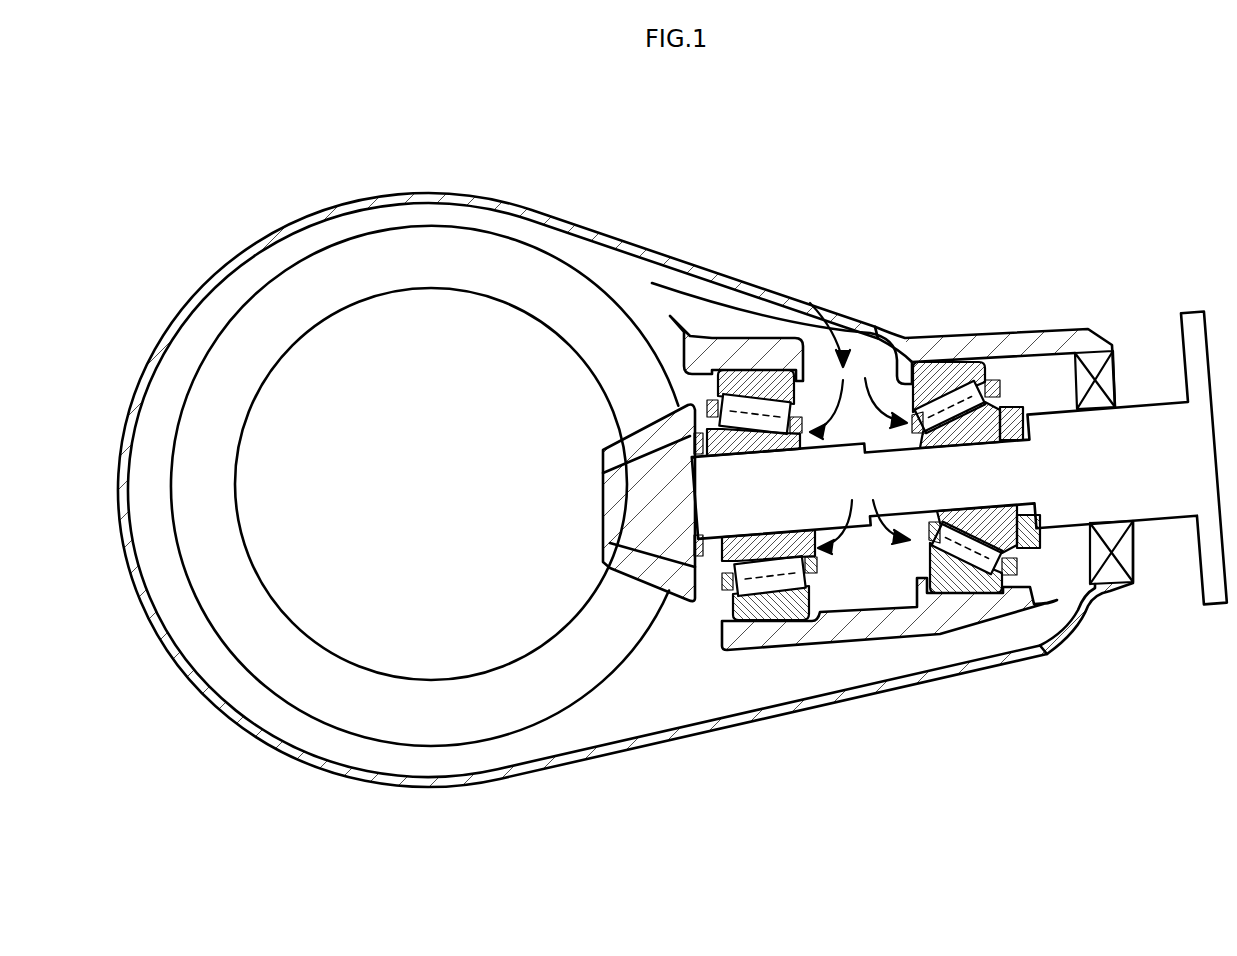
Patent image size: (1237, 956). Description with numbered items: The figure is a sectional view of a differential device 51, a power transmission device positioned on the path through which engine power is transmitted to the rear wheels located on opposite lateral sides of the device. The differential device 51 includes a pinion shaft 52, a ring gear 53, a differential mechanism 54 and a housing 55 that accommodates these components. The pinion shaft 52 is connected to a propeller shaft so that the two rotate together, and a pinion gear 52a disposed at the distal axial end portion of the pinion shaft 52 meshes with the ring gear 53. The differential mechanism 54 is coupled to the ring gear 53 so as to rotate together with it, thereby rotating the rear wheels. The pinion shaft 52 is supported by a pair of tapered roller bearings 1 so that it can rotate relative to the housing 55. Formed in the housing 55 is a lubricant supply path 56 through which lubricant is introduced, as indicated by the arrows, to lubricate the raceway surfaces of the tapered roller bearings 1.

The tapered roller bearing 1 is at (745, 367).
The differential device 51 is at (273, 162).
The pinion shaft 52 is at (1155, 400).
The pinion gear 52a is at (680, 585).
The ring gear 53 is at (528, 262).
The differential mechanism 54 is at (438, 355).
The housing 55 is at (640, 250).
The lubricant supply path 56 is at (815, 318).